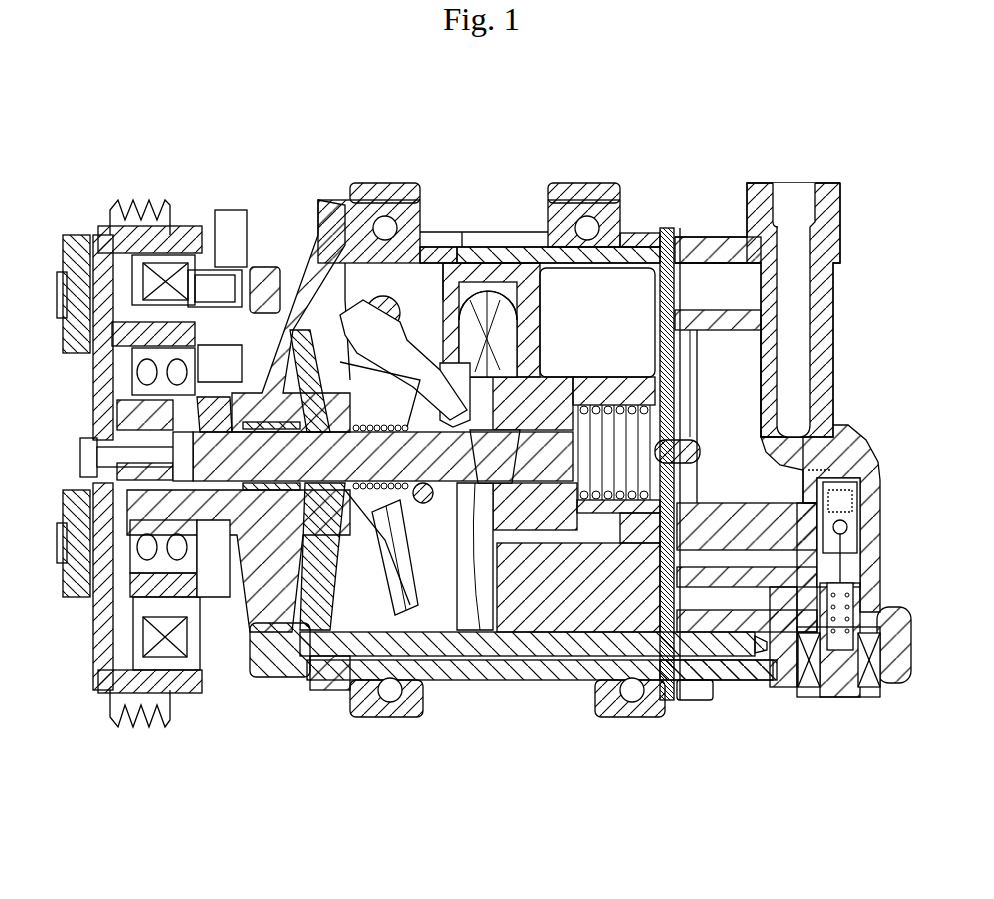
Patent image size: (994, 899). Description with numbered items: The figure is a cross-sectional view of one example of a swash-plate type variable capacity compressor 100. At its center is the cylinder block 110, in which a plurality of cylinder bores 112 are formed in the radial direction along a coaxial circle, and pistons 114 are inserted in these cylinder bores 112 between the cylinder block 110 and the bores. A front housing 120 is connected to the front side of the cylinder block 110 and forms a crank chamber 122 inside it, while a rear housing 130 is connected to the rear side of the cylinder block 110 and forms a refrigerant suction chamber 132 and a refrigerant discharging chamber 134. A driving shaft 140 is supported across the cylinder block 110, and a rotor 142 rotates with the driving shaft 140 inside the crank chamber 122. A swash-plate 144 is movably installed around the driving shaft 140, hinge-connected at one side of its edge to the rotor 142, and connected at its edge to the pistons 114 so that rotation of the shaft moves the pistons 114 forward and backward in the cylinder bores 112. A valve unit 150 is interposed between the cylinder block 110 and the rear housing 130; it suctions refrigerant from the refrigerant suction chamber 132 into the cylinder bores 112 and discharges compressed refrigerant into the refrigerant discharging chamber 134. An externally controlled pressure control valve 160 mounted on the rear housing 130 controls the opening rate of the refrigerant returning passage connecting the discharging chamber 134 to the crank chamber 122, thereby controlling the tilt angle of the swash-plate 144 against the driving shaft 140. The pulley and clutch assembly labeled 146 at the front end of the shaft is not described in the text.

The swash-plate type variable capacity compressor 100 is at (284, 162).
The cylinder block 110 is at (642, 222).
The cylinder bores 112 is at (540, 263).
The pistons 114 is at (495, 247).
The front housing 120 is at (298, 240).
The crank chamber 122 is at (360, 277).
The rear housing 130 is at (744, 682).
The refrigerant suction chamber 132 is at (728, 297).
The refrigerant discharging chamber 134 is at (750, 387).
The driving shaft 140 is at (445, 467).
The rotor 142 is at (326, 623).
The swash-plate 144 is at (397, 580).
The electromagnetic clutch pulley 146 is at (153, 265).
The valve unit 150 is at (672, 293).
The externally controlled pressure control valve 160 is at (840, 680).